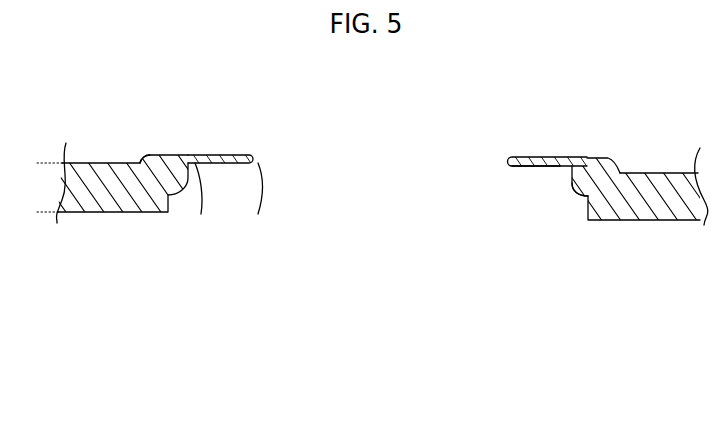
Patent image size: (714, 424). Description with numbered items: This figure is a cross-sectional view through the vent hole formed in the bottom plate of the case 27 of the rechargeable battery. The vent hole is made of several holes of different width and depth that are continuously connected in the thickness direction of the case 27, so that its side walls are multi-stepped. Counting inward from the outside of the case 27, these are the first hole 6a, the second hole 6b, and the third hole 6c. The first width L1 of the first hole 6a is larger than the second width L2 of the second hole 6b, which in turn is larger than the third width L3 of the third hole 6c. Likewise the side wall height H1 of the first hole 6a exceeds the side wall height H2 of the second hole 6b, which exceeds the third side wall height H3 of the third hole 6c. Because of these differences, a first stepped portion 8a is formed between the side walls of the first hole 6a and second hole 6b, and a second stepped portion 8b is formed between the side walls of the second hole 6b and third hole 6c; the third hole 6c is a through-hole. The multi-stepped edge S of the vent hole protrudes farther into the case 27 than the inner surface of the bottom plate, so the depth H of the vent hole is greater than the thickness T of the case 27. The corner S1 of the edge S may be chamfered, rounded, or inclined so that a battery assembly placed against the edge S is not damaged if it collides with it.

The first hole 6a is at (177, 212).
The second hole 6b is at (200, 165).
The third hole 6c is at (260, 166).
The first stepped portion 8a is at (582, 208).
The second stepped portion 8b is at (526, 172).
The case 27 is at (643, 220).
The edge S is at (203, 150).
The corner S1 is at (143, 151).
The thickness T is at (41, 163).
The depth H is at (343, 153).
The side wall height H1 is at (288, 187).
The side wall height H2 is at (288, 165).
The third side wall height H3 is at (288, 153).
The first width L1 is at (583, 404).
The second width L2 is at (570, 362).
The third width L3 is at (507, 320).